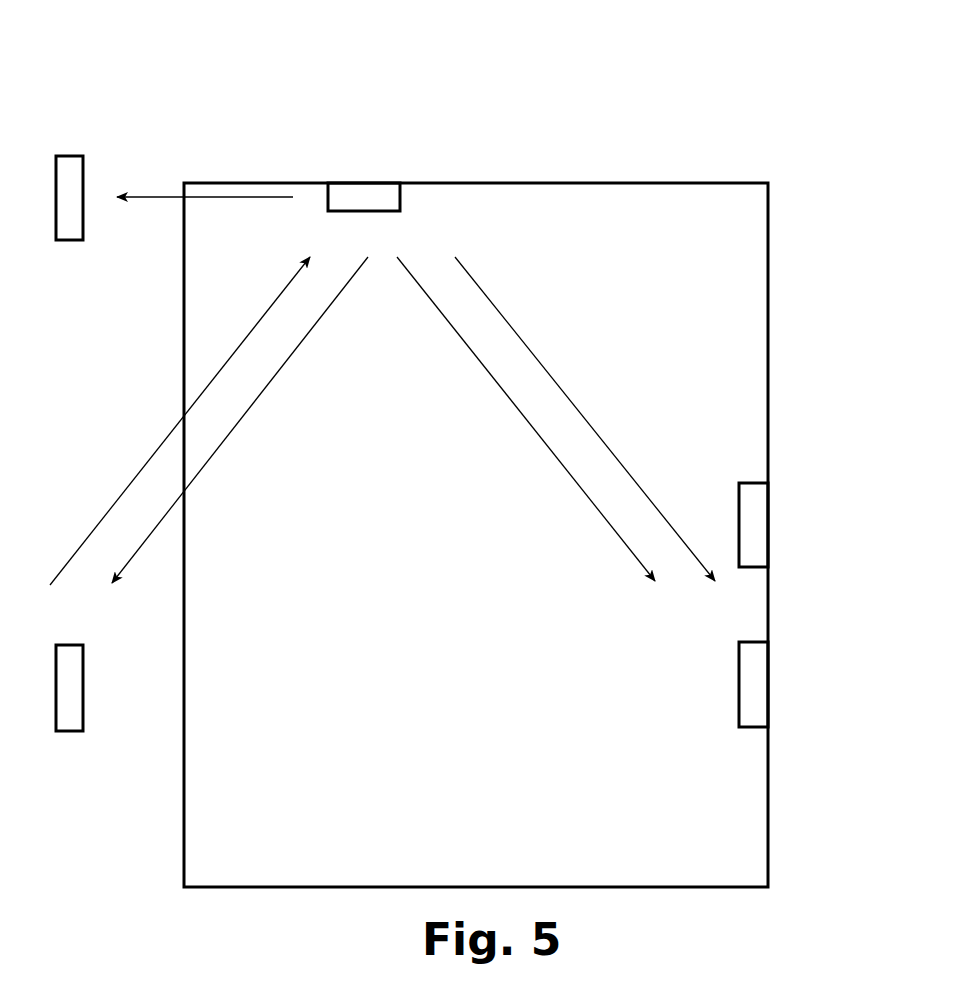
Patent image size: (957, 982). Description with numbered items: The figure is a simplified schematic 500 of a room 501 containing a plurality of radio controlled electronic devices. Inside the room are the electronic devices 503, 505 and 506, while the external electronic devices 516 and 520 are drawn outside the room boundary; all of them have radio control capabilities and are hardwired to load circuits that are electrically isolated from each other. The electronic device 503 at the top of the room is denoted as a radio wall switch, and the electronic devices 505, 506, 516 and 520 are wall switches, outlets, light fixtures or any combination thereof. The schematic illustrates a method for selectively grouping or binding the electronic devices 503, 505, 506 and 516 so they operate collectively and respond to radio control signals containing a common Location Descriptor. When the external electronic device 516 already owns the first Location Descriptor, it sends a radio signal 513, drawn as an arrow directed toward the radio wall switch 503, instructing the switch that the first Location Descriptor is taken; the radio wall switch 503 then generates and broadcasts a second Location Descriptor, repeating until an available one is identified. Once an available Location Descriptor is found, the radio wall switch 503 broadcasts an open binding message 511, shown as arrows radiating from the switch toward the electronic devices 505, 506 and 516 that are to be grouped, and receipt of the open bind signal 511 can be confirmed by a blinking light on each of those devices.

The simplified schematic 500 is at (186, 80).
The chamber 501 is at (495, 549).
The radio wall switch 503 is at (362, 183).
The electronic device 505 is at (768, 523).
The electronic device 506 is at (768, 683).
The open binding message 511 is at (222, 197).
The radio signal 513 is at (141, 470).
The external electronic device 516 is at (83, 685).
The external electronic device 520 is at (83, 226).